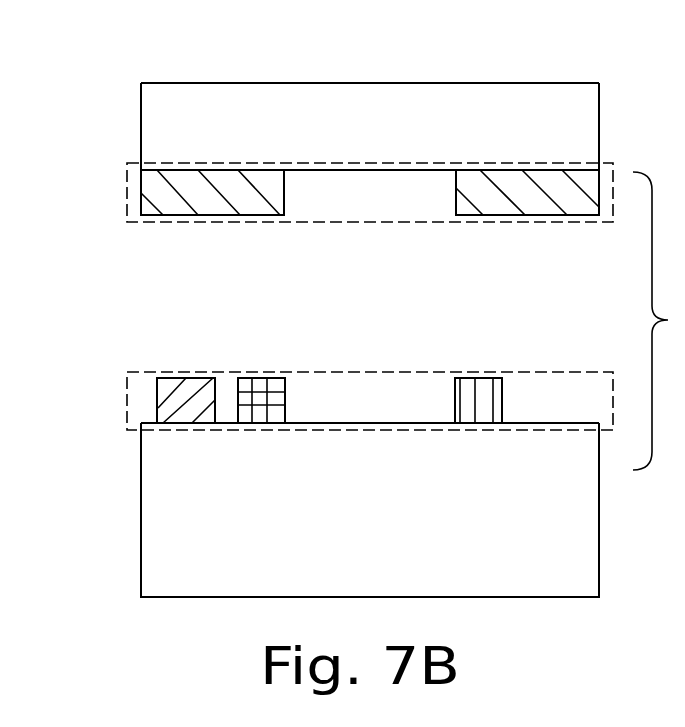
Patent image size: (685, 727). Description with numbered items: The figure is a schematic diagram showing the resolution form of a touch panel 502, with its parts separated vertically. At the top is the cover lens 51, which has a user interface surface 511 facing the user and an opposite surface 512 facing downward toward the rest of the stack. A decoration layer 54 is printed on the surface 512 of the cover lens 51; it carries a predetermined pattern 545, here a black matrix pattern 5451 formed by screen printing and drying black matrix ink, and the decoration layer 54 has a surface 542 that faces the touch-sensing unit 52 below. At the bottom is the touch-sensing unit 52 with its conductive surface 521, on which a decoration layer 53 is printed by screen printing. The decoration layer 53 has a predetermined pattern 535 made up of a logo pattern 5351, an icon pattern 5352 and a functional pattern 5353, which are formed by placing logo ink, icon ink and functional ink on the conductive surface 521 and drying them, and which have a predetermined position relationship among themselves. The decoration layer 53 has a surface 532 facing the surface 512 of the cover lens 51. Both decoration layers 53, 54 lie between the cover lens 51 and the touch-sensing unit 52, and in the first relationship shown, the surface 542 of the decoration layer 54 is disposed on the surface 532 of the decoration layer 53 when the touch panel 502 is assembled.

The touch panel 502 is at (601, 57).
The cover lens 51 is at (343, 147).
The user interface surface 511 is at (302, 83).
The surface 512 is at (355, 171).
The decoration layer 54 is at (127, 212).
The surface 542 is at (217, 234).
The black matrix pattern 5451 is at (212, 200).
The predetermined pattern 545 is at (541, 217).
The decoration layer 53 is at (127, 398).
The logo pattern 5351 is at (192, 388).
The functional pattern 5353 is at (262, 394).
The surface 532 is at (279, 378).
The predetermined pattern 535 is at (465, 378).
The icon pattern 5352 is at (485, 405).
The touch-sensing unit 52 is at (348, 463).
The conductive surface 521 is at (330, 420).